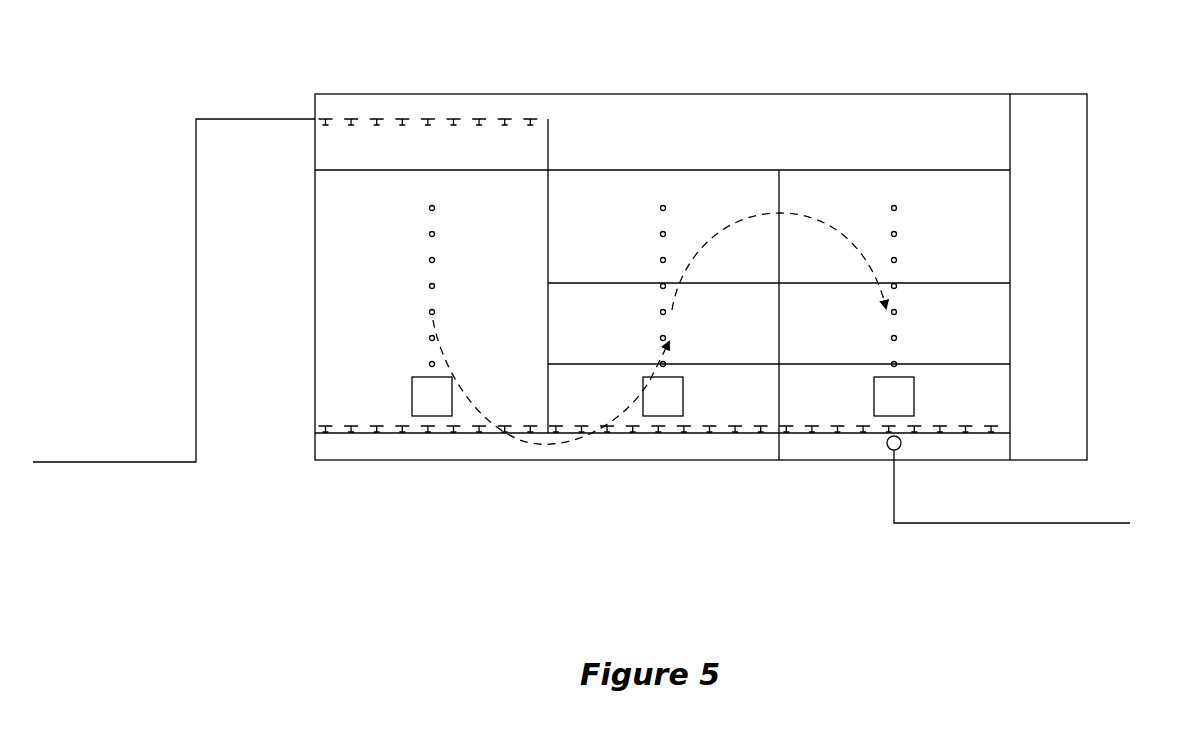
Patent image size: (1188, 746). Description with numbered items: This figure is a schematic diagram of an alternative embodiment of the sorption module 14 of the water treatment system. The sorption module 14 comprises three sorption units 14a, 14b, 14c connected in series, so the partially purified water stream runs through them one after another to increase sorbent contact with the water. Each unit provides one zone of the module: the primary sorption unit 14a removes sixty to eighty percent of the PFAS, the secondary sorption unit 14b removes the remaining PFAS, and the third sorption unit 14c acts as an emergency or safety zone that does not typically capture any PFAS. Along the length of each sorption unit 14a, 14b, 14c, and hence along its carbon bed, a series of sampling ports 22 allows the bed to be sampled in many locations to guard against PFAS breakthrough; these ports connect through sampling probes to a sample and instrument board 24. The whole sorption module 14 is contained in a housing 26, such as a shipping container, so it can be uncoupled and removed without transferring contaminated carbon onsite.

The sorption module 14 is at (537, 530).
The first sorption unit 14a is at (435, 169).
The second sorption unit 14b is at (623, 170).
The third sorption unit 14c is at (872, 170).
The sampling ports 22 is at (665, 233).
The sample and instrument board 24 is at (1063, 178).
The housing 26 is at (813, 460).